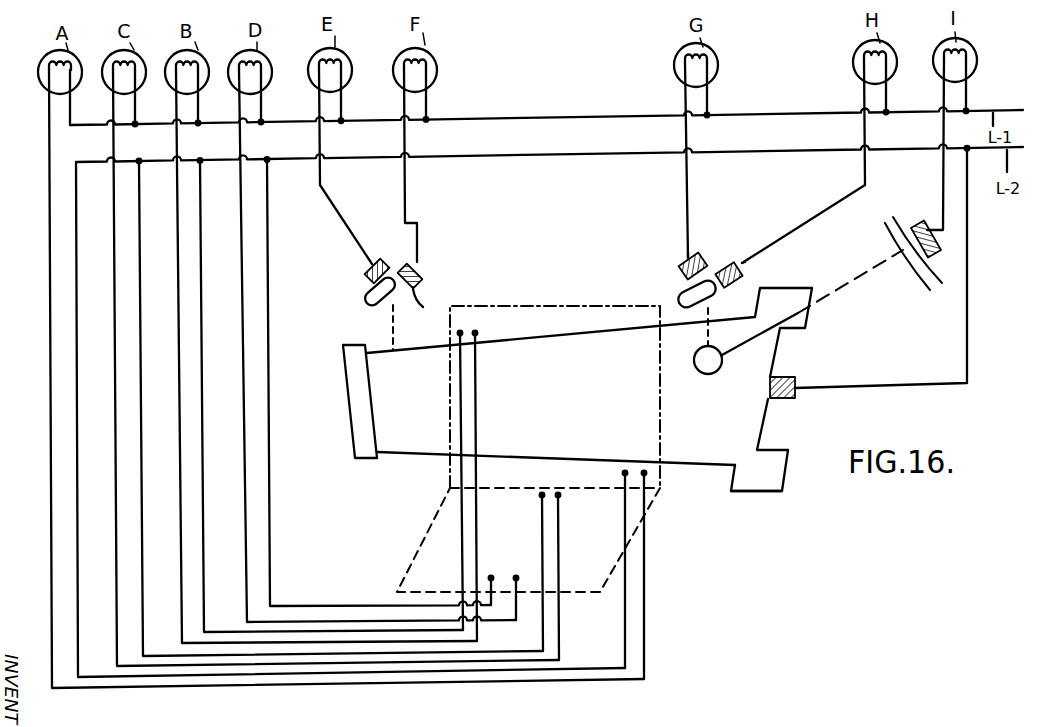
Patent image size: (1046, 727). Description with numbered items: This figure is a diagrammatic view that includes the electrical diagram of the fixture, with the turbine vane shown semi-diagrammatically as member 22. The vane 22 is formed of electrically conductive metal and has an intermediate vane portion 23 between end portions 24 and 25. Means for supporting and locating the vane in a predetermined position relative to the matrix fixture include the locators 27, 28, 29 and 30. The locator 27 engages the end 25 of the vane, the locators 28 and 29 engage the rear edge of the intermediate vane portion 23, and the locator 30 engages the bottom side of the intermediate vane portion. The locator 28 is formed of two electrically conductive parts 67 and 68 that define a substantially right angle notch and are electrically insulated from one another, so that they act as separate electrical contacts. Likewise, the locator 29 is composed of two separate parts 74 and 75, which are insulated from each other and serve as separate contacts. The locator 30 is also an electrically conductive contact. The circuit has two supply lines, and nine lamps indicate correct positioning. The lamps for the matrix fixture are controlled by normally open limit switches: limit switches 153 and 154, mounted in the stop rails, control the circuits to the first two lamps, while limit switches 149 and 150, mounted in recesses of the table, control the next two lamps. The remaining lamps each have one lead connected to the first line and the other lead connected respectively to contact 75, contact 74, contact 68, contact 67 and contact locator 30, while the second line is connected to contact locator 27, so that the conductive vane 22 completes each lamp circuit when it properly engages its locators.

The member 22 is at (714, 484).
The intermediate vane portion 23 is at (368, 304).
The end portion 24 is at (350, 413).
The end portion 25 is at (782, 491).
The locator 27 is at (793, 399).
The locator 28 is at (728, 246).
The locator 29 is at (432, 277).
The locator 30 is at (923, 221).
The part 67 is at (744, 278).
The part 68 is at (698, 253).
The part 74 is at (422, 309).
The part 75 is at (366, 277).
The limit switch 149 is at (549, 490).
The limit switch 150 is at (502, 573).
The limit switch 153 is at (628, 468).
The limit switch 154 is at (463, 332).